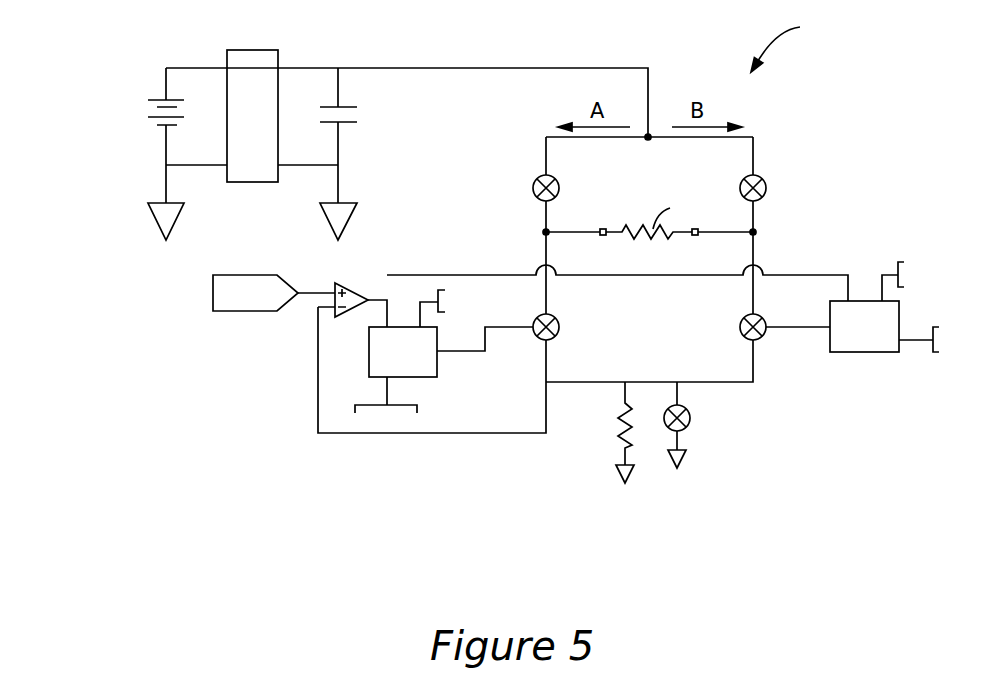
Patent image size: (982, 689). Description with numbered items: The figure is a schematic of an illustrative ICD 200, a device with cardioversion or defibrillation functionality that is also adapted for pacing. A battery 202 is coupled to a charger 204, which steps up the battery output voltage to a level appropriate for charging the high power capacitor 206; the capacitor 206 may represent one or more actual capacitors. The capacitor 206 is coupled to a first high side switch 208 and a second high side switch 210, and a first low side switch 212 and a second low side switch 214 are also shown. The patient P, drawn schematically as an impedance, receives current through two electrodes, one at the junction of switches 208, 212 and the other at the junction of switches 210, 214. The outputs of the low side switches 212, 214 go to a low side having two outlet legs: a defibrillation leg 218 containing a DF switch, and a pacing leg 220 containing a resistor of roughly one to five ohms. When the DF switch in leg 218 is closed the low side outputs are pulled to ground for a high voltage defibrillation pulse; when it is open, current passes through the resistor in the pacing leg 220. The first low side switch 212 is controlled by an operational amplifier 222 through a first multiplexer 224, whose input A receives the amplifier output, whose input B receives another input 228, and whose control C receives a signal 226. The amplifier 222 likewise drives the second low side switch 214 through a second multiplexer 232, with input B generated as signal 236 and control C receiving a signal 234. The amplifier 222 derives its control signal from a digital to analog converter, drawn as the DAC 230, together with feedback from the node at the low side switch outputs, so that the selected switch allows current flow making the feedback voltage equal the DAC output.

The ICD 200 is at (798, 43).
The battery 202 is at (163, 128).
The charger 204 is at (243, 50).
The high power capacitor 206 is at (347, 124).
The first high side switch 208 is at (533, 187).
The second high side switch 210 is at (766, 190).
The first low side switch 212 is at (559, 330).
The second low side switch 214 is at (740, 323).
The defibrillation (DF) leg 218 is at (683, 458).
The pacing leg 220 is at (620, 452).
The operational amplifier 222 is at (355, 283).
The first multiplexer 224 is at (425, 373).
The signal 226 is at (386, 418).
The input 228 is at (462, 302).
The digital-to-analog converter 230 is at (243, 312).
The second multiplexer 232 is at (850, 342).
The signal 234 is at (957, 340).
The signal 236 is at (922, 275).
The patient P is at (649, 218).